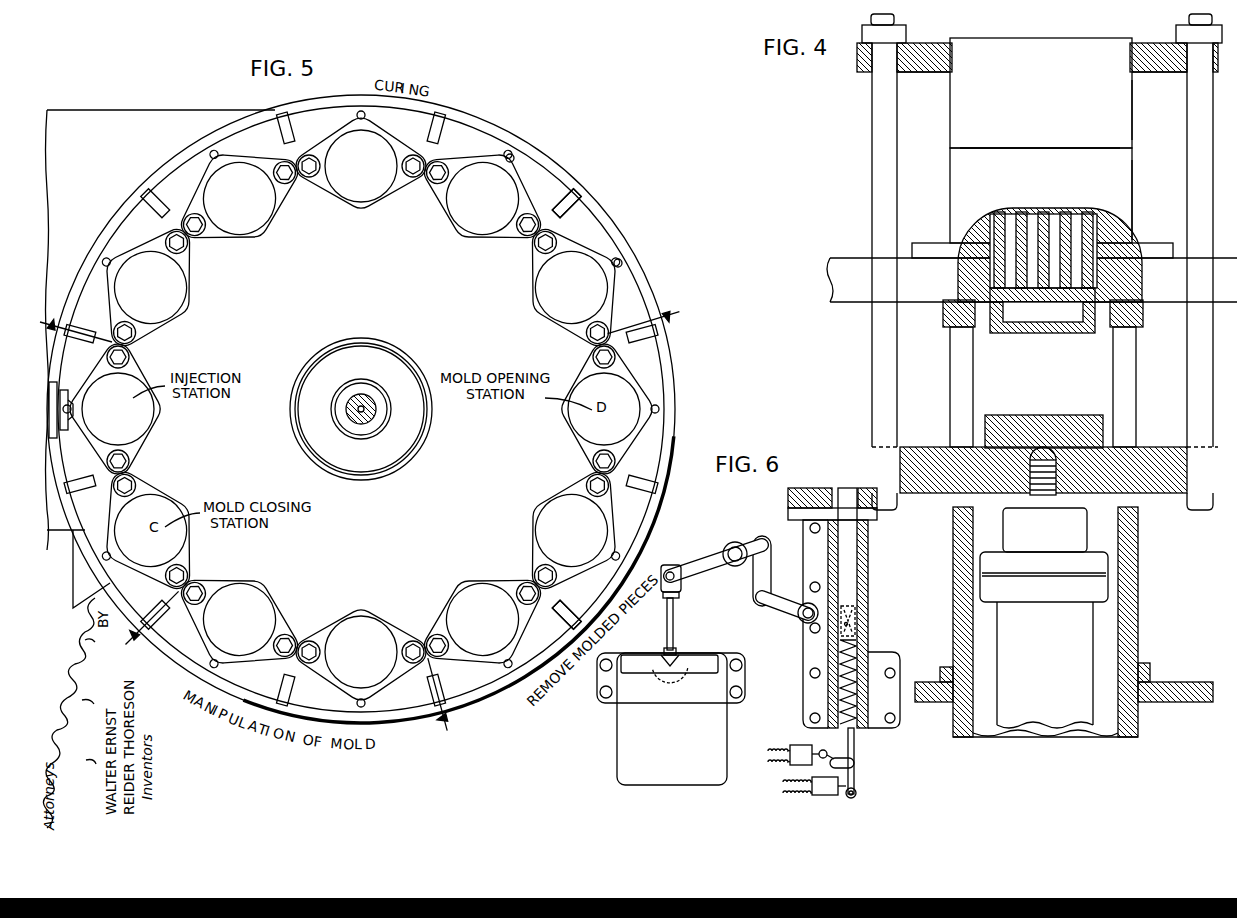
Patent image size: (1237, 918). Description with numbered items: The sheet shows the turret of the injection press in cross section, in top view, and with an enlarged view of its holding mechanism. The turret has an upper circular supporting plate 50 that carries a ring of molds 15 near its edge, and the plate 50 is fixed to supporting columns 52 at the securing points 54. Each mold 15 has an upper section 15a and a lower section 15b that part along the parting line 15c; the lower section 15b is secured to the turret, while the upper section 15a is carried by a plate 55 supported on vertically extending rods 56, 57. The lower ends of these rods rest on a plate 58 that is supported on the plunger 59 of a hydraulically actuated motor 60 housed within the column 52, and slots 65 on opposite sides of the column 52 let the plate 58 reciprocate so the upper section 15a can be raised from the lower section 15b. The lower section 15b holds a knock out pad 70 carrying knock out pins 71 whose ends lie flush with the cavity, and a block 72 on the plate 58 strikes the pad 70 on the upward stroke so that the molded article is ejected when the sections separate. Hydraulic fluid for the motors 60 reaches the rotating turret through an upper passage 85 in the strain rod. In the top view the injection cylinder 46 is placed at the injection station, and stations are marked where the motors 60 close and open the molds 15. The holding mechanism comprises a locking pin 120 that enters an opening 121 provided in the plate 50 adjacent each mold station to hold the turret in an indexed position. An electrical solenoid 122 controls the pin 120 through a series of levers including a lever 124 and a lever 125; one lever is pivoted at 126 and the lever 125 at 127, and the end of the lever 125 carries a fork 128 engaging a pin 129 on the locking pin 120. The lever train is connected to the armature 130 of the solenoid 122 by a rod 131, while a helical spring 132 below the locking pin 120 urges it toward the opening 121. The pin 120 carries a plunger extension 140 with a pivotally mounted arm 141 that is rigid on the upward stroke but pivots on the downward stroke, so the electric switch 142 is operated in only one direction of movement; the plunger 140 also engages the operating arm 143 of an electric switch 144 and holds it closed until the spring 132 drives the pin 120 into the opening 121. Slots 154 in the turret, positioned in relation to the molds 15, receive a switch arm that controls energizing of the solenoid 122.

In FIG. 5, the mold 15 is at (300, 226).
In FIG. 4, the mold 15 is at (1133, 131).
In FIG. 5, the upper section 15a is at (462, 226).
In FIG. 4, the upper section 15a is at (1132, 108).
In FIG. 4, the lower section 15b is at (1132, 203).
In FIG. 4, the parting line 15c is at (1030, 148).
In FIG. 5, the injection cylinder 46 is at (58, 390).
In FIG. 5, the upper circular supporting plate 50 is at (656, 383).
In FIG. 6, the upper circular supporting plate 50 is at (795, 497).
In FIG. 4, the upper circular supporting plate 50 is at (1032, 280).
In FIG. 4, the supporting column 52 is at (956, 564).
In FIG. 4, the securing point 54 is at (944, 314).
In FIG. 5, the plate 55 is at (440, 192).
In FIG. 4, the plate 55 is at (1150, 44).
In FIG. 4, the vertically extending rods 56 is at (872, 125).
In FIG. 4, the tie rod 57 is at (1208, 120).
In FIG. 4, the plate 58 is at (1166, 493).
In FIG. 4, the plunger 59 is at (1055, 500).
In FIG. 4, the hydraulically actuated motor 60 is at (1052, 623).
In FIG. 4, the slots 65 is at (962, 380).
In FIG. 4, the knock out pad 70 is at (1056, 318).
In FIG. 4, the knock out pins 71 is at (1044, 284).
In FIG. 4, the block 72 is at (1050, 415).
In FIG. 5, the upper passage 85 is at (355, 405).
In FIG. 6, the locking pin 120 is at (852, 539).
In FIG. 5, the opening 121 is at (513, 154).
In FIG. 6, the opening 121 is at (845, 494).
In FIG. 6, the electrical solenoid 122 is at (624, 722).
In FIG. 6, the lever 124 is at (767, 570).
In FIG. 6, the lever 125 is at (788, 604).
In FIG. 6, the pivot 126 is at (737, 548).
In FIG. 6, the pivot 127 is at (805, 622).
In FIG. 6, the fork 128 is at (865, 626).
In FIG. 6, the pin 129 is at (712, 557).
In FIG. 6, the armature 130 is at (685, 666).
In FIG. 6, the rod 131 is at (667, 628).
In FIG. 6, the helical spring 132 is at (868, 660).
In FIG. 6, the plunger extension 140 is at (856, 750).
In FIG. 6, the pivotally mounted arm 141 is at (858, 763).
In FIG. 6, the electric switch 142 is at (806, 742).
In FIG. 6, the operating arm 143 is at (857, 793).
In FIG. 6, the electric switch 144 is at (812, 780).
In FIG. 5, the slot 154 is at (578, 198).